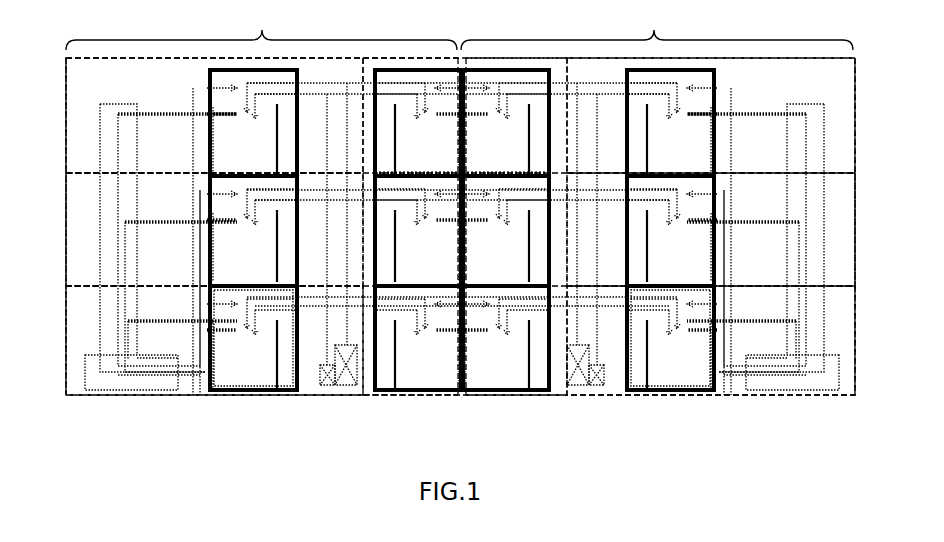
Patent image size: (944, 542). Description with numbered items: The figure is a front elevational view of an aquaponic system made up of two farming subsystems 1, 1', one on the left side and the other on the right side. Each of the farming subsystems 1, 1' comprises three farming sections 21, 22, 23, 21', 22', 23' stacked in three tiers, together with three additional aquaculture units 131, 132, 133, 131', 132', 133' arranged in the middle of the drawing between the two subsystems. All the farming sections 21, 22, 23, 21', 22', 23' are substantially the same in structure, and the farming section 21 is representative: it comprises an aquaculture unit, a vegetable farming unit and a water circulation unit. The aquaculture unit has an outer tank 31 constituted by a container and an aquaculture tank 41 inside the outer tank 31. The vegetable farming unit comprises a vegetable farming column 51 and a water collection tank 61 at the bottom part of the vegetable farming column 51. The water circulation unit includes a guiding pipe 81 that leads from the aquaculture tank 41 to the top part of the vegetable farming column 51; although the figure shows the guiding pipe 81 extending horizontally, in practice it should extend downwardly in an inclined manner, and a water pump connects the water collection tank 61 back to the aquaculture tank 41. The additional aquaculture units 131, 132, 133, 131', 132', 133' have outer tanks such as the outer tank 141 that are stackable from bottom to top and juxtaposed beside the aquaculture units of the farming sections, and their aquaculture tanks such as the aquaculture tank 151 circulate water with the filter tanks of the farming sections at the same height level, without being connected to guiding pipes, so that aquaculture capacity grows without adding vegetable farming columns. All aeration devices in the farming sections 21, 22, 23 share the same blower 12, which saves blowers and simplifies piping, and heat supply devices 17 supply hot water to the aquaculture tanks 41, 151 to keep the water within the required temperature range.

The farming subsystem 1 is at (261, 199).
The farming subsystem 1' is at (658, 199).
The farming section 23 is at (191, 115).
The farming section 22 is at (191, 229).
The farming section 21 is at (191, 340).
The farming section 23' is at (731, 115).
The farming section 22' is at (728, 229).
The farming section 21' is at (727, 340).
The additional aquaculture unit 133 is at (393, 200).
The additional aquaculture unit 133' is at (516, 202).
The additional aquaculture unit 132 is at (417, 89).
The additional aquaculture unit 132' is at (494, 92).
The additional aquaculture unit 131 is at (410, 412).
The additional aquaculture unit 131' is at (516, 412).
The outer tank 31 is at (207, 381).
The aquaculture tank 41 is at (258, 373).
The outer tank 141 is at (378, 373).
The aquaculture tank 151 is at (443, 372).
The blower 12 is at (320, 382).
The heat supply device 17 is at (345, 382).
The water collection tank 61 is at (102, 378).
The vegetable farming column 51 is at (100, 316).
The guiding pipe 81 is at (165, 318).